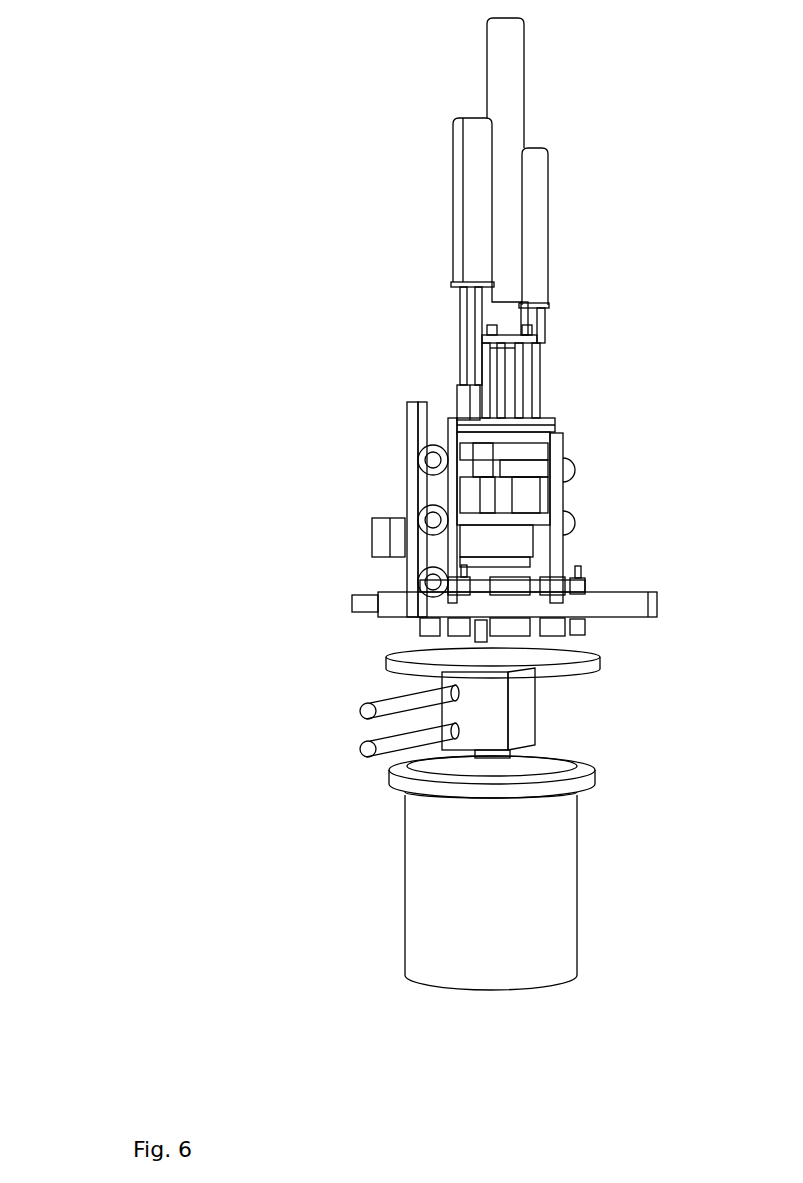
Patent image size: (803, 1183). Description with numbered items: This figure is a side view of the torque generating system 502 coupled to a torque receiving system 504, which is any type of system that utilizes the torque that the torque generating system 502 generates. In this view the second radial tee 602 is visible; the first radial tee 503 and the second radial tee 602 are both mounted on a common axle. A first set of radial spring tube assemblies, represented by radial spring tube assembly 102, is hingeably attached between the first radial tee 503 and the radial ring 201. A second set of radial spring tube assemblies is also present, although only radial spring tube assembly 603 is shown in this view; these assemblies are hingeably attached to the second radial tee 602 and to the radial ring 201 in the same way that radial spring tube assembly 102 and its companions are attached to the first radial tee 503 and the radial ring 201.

The torque generating system 502 is at (400, 171).
The first radial tee 503 is at (460, 584).
The radial spring tube assembly 102 is at (507, 588).
The radial ring 201 is at (483, 610).
The second radial tee 602 is at (450, 630).
The radial spring tube assembly 603 is at (500, 628).
The torque receiving system 504 is at (365, 910).